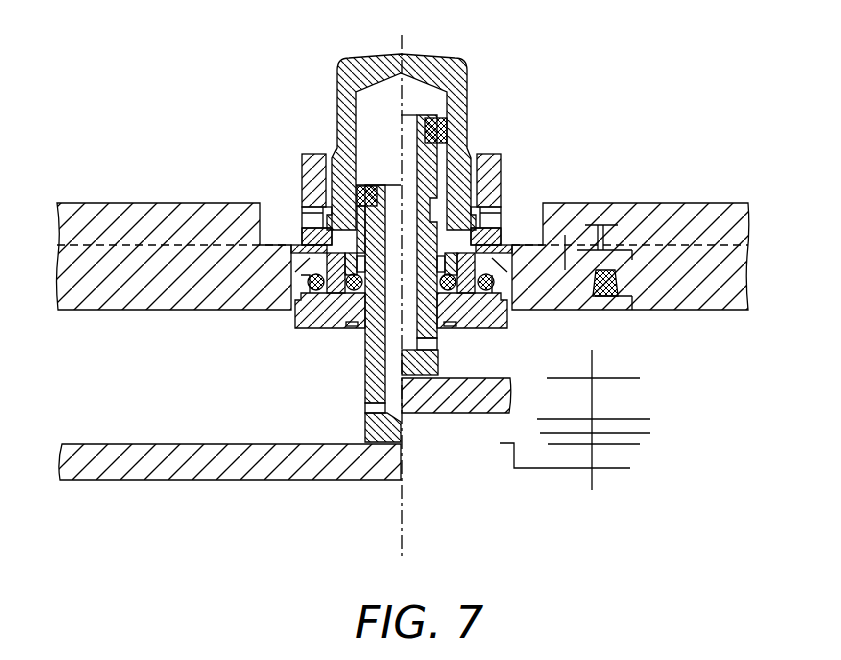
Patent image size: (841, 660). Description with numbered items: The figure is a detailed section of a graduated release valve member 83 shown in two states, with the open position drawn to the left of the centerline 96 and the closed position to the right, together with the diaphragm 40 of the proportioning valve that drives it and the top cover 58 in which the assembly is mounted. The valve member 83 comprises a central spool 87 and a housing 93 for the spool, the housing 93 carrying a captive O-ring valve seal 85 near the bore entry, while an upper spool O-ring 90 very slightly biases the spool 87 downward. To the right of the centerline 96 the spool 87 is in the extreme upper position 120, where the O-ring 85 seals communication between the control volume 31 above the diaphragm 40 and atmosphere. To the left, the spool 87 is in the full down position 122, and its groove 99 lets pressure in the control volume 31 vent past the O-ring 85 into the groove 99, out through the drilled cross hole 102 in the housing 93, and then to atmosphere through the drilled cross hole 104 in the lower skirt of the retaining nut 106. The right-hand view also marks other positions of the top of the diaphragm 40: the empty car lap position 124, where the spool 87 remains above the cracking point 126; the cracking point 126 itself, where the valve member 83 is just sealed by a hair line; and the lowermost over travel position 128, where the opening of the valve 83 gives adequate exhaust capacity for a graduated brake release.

The control volume 31 is at (167, 342).
The diaphragm 40 is at (290, 480).
The top cover 58 is at (90, 203).
The graduated release valve member 83 is at (607, 48).
The O-ring valve seal 85 is at (318, 287).
The spool 87 is at (365, 390).
The upper spool O-ring 90 is at (367, 186).
The housing 93 is at (348, 62).
The centerline 96 is at (402, 540).
The groove 99 is at (377, 283).
The drilled cross hole 102 is at (300, 243).
The drilled cross hole 104 is at (297, 222).
The retaining nut 106 is at (315, 154).
The extreme upper position 120 is at (640, 378).
The full down position 122 is at (640, 444).
The empty car lap position 124 is at (650, 419).
The cracking point 126 is at (648, 433).
The over travel position 128 is at (630, 468).